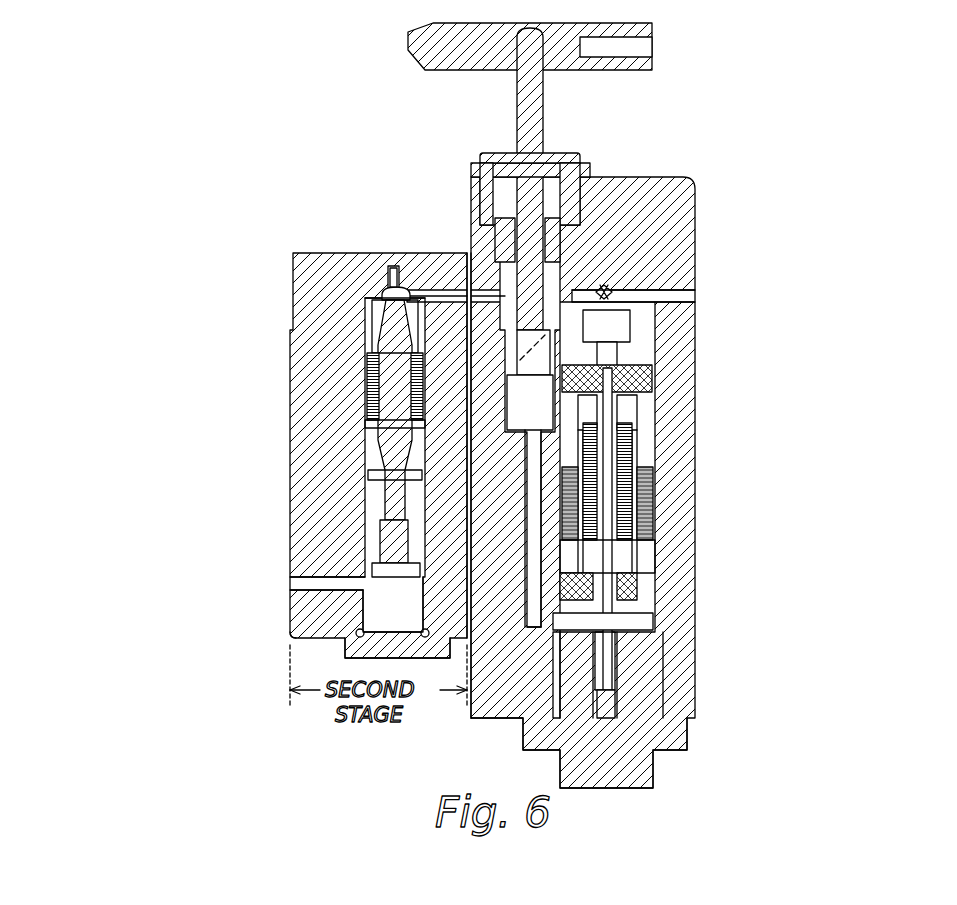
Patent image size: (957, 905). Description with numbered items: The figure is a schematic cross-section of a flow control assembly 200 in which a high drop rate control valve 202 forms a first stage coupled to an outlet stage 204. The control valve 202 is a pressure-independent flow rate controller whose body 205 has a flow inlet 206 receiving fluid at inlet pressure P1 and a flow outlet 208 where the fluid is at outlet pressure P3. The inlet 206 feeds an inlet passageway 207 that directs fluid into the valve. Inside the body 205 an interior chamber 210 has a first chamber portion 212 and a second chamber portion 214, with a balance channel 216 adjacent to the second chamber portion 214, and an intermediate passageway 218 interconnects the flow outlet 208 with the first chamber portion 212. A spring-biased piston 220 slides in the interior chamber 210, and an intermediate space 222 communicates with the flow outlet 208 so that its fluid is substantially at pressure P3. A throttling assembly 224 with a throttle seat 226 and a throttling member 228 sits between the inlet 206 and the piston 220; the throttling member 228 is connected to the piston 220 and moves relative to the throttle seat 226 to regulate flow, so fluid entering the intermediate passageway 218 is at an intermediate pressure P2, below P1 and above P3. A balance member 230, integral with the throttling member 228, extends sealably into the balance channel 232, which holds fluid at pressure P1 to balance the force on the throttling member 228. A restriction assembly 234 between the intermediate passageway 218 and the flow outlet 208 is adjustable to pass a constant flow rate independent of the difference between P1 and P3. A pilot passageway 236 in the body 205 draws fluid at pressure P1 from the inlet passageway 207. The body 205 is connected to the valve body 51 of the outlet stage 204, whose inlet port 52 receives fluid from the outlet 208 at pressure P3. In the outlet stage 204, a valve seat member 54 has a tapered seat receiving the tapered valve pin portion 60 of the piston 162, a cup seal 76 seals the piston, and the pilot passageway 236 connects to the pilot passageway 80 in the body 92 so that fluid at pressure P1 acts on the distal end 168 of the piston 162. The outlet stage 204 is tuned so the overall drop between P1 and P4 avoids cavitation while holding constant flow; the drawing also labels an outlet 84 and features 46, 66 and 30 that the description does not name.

The flow control assembly 200 is at (130, 190).
The high drop rate control valve 202 is at (805, 235).
The outlet stage 204 is at (272, 470).
The handle 46 is at (655, 42).
The body 205 is at (600, 190).
The intermediate space 222 is at (500, 215).
The restriction assembly 234 is at (552, 215).
The flow outlet 208 is at (485, 300).
The inlet port 52 is at (457, 300).
The pilot passageway 236 is at (440, 300).
The inlet passageway 207 is at (655, 298).
The flow inlet 206 is at (700, 296).
The valve seat member 54 is at (385, 295).
The tapered valve pin portion 60 is at (375, 330).
The sleeve 66 is at (372, 380).
The piston 162 is at (380, 400).
The cup seal 76 is at (378, 470).
The distal end 168 is at (380, 500).
The pilot passageway 80 is at (395, 560).
The outlet 84 is at (290, 583).
The valve body 51 is at (300, 600).
The body 92 is at (310, 630).
The intermediate passageway 218 is at (455, 645).
The lower body 30 is at (448, 735).
The throttling assembly 224 is at (650, 335).
The throttle seat 226 is at (655, 375).
The throttling member 228 is at (655, 390).
The first chamber portion 212 is at (655, 470).
The second chamber portion 214 is at (653, 490).
The interior chamber 210 is at (655, 520).
The balance channel 216 is at (655, 545).
The spring-biased piston 220 is at (652, 580).
The balance member 230 is at (640, 640).
The balance channel 232 is at (615, 700).
The inlet pressure P1 is at (693, 240).
The intermediate pressure P2 is at (518, 545).
The outlet pressure P3 is at (428, 300).
The final pressure P4 is at (368, 345).